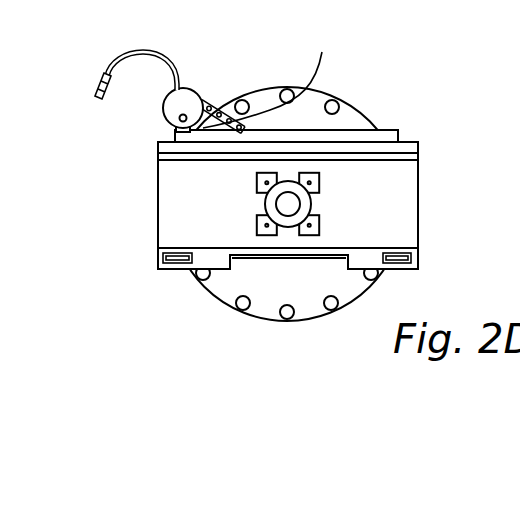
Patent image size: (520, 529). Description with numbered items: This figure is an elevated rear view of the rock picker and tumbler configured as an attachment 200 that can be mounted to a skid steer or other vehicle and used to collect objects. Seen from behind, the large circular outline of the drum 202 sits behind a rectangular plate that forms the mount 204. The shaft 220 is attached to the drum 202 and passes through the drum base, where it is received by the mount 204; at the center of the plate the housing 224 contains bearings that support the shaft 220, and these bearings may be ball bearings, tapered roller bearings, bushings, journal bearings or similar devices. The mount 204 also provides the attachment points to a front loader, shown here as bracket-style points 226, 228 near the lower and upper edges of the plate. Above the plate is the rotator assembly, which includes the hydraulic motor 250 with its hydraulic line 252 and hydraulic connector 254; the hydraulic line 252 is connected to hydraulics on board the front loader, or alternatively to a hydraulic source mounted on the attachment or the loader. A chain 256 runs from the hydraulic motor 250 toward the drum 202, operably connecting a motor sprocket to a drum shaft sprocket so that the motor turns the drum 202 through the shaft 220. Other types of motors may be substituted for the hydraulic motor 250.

The attachment 200 is at (365, 56).
The drum 202 is at (365, 116).
The mount 204 is at (386, 218).
The shaft 220 is at (287, 206).
The housing 224 is at (267, 211).
The bracket-style attachment point 226 is at (413, 257).
The bracket-style attachment point 228 is at (415, 150).
The hydraulic motor 250 is at (186, 104).
The hydraulic line 252 is at (173, 62).
The hydraulic connector 254 is at (100, 80).
The chain 256 is at (272, 81).